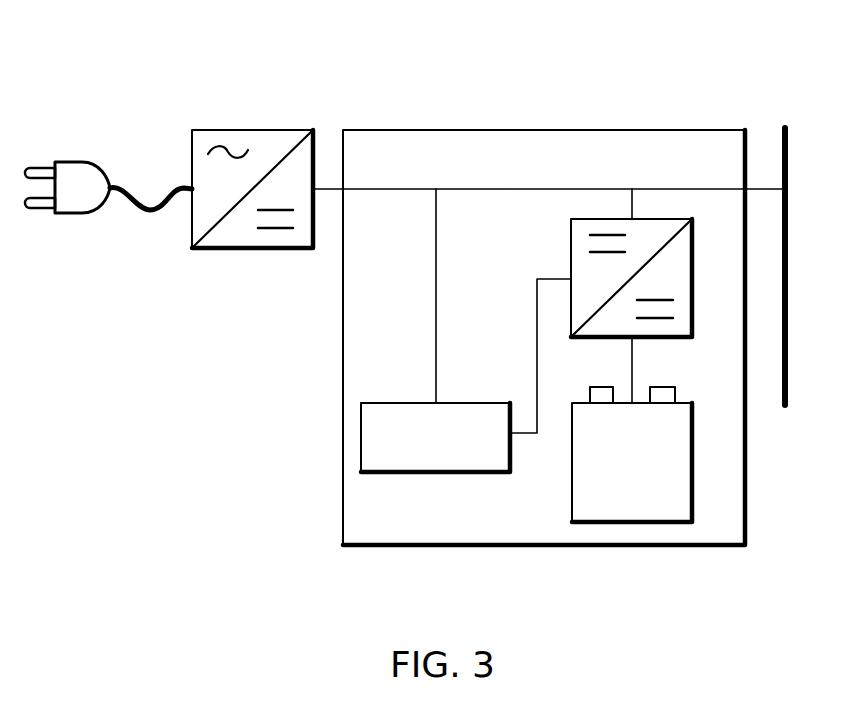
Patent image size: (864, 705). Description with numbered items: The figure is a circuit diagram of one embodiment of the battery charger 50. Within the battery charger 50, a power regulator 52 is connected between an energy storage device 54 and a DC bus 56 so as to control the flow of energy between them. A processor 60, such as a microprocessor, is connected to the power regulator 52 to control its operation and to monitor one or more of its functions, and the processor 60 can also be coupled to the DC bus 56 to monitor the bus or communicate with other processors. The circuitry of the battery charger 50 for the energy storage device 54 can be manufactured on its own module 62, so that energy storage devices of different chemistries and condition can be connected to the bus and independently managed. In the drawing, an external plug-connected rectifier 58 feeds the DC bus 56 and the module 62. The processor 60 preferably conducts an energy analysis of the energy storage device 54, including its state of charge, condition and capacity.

The battery charger 50 is at (694, 64).
The power regulator 52 is at (694, 273).
The energy storage device 54 is at (694, 461).
The DC bus 56 is at (789, 273).
The external AC-DC rectifier 58 is at (258, 250).
The processor 60 is at (437, 474).
The module 62 is at (547, 548).